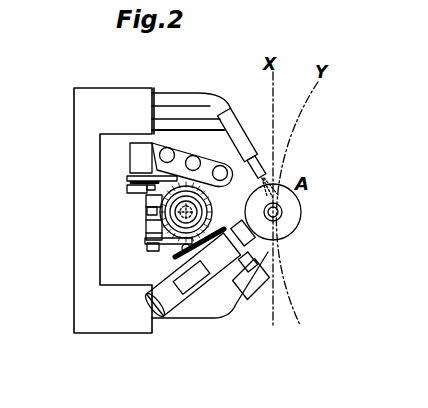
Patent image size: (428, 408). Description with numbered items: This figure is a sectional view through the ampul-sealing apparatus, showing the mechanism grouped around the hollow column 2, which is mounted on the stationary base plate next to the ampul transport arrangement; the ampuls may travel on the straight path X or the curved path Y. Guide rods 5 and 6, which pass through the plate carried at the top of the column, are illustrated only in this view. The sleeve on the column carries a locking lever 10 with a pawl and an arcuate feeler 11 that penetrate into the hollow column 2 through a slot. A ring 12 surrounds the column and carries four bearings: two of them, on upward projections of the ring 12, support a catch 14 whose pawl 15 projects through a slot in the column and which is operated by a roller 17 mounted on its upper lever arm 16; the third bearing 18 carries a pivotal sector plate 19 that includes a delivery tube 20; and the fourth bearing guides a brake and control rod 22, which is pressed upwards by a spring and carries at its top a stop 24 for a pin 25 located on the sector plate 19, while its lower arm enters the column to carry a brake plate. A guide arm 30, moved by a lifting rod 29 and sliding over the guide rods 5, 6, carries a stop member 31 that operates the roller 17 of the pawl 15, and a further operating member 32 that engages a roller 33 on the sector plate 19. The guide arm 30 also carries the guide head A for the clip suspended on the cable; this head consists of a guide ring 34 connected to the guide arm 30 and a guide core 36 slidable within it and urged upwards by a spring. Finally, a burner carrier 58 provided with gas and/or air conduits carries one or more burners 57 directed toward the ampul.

The hollow column 2 is at (209, 236).
The guide rod 5 is at (163, 150).
The guide rod 6 is at (211, 163).
The locking lever 10 is at (128, 184).
The arcuate feeler 11 is at (147, 228).
The ring 12 is at (263, 172).
The catch 14 is at (153, 247).
The pawl 15 is at (140, 212).
The upper lever arm 16 is at (132, 179).
The roller 17 is at (131, 189).
The third bearing 18 is at (148, 222).
The sector plate 19 is at (233, 306).
The delivery tube 20 is at (222, 285).
The brake and control rod 22 is at (172, 250).
The stop 24 is at (232, 290).
The pin 25 is at (198, 272).
The lifting rod 29 is at (186, 152).
The guide arm 30 is at (208, 158).
The stop member 31 is at (131, 179).
The operating member 32 is at (229, 207).
The roller 33 is at (247, 263).
The guide ring 34 is at (287, 214).
The guide core 36 is at (300, 216).
The burner 57 is at (236, 134).
The burner carrier 58 is at (96, 287).